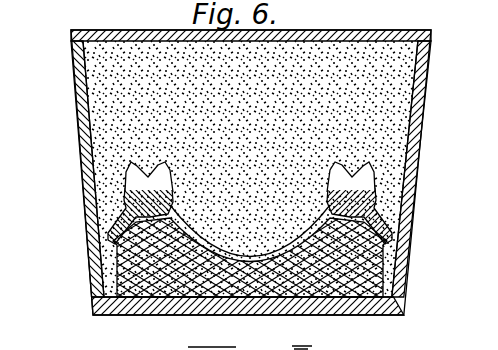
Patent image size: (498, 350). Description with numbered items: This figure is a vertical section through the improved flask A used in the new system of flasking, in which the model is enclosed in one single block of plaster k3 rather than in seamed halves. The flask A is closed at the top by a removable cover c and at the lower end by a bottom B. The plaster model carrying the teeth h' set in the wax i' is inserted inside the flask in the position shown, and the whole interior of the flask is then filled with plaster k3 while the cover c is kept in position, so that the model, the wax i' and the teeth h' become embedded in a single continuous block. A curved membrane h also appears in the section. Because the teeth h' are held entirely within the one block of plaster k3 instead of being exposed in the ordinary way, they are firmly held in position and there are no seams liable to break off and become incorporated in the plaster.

The flask A is at (78, 88).
The removable cover c is at (377, 29).
The curved membrane h is at (230, 129).
The plaster k3 is at (357, 100).
The teeth h' is at (242, 190).
The wax i' is at (234, 195).
The bottom B is at (312, 310).